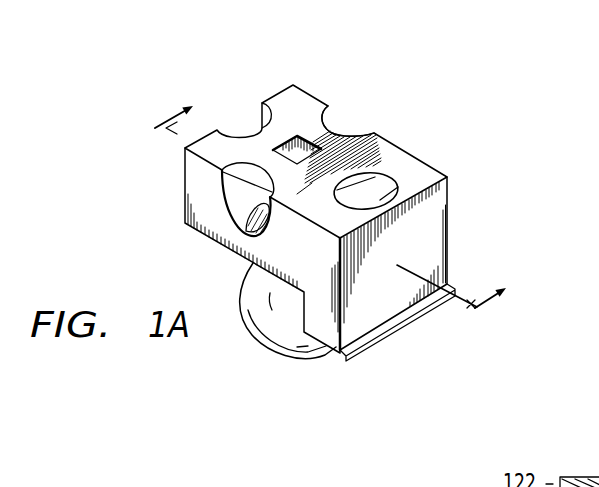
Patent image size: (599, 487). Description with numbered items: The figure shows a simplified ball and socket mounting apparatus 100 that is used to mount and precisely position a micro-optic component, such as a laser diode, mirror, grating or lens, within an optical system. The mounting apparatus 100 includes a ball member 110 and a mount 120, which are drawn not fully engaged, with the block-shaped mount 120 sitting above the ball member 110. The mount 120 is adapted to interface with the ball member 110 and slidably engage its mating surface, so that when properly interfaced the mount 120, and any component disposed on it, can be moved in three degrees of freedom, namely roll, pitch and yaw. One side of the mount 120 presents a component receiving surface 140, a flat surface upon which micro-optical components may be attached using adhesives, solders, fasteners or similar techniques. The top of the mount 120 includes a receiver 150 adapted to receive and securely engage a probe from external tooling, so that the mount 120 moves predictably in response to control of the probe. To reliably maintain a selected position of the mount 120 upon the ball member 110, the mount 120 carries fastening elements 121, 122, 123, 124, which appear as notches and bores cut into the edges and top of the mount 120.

The mounting apparatus 100 is at (175, 51).
The ball member 110 is at (268, 352).
The mount 120 is at (432, 174).
The fastening element 121 is at (347, 122).
The fastening element 122 is at (247, 120).
The fastening element 123 is at (242, 190).
The fastening element 124 is at (383, 187).
The component receiving surface 140 is at (452, 204).
The receiver 150 is at (307, 147).